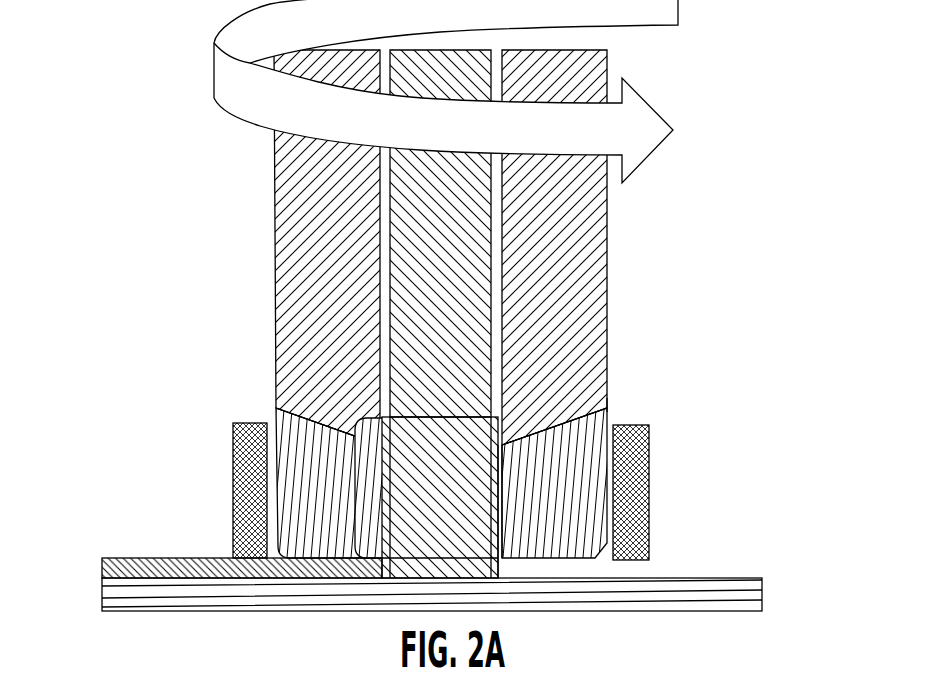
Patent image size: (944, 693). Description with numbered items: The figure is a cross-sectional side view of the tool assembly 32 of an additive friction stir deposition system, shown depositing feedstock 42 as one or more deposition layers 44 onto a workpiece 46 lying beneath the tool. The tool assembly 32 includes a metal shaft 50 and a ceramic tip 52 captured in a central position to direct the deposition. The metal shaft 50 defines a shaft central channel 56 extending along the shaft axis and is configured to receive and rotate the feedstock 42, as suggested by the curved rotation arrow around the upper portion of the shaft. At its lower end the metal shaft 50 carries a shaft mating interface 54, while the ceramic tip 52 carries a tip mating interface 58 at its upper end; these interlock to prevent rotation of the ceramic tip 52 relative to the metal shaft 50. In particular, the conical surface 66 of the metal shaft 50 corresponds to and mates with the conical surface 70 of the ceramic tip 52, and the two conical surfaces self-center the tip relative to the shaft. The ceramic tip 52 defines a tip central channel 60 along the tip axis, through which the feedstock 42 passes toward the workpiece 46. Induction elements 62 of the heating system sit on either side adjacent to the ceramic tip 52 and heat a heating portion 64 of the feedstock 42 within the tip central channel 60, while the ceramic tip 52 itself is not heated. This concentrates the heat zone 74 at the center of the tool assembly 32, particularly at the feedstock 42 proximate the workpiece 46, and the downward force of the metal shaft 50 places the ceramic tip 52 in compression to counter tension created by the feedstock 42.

The tool assembly 32 is at (716, 108).
The feedstock 42 is at (435, 199).
The deposition layers 44 is at (102, 570).
The workpiece 46 is at (102, 600).
The metal shaft 50 is at (608, 305).
The ceramic tip 52 is at (607, 497).
The shaft mating interface 54 is at (603, 414).
The shaft central channel 56 is at (503, 268).
The tip mating interface 58 is at (295, 417).
The tip central channel 60 is at (509, 524).
The induction element 62 is at (233, 441).
The heating portion 64 is at (353, 488).
The conical surface 66 is at (548, 433).
The conical surface 70 is at (335, 425).
The heat zone 74 is at (443, 417).